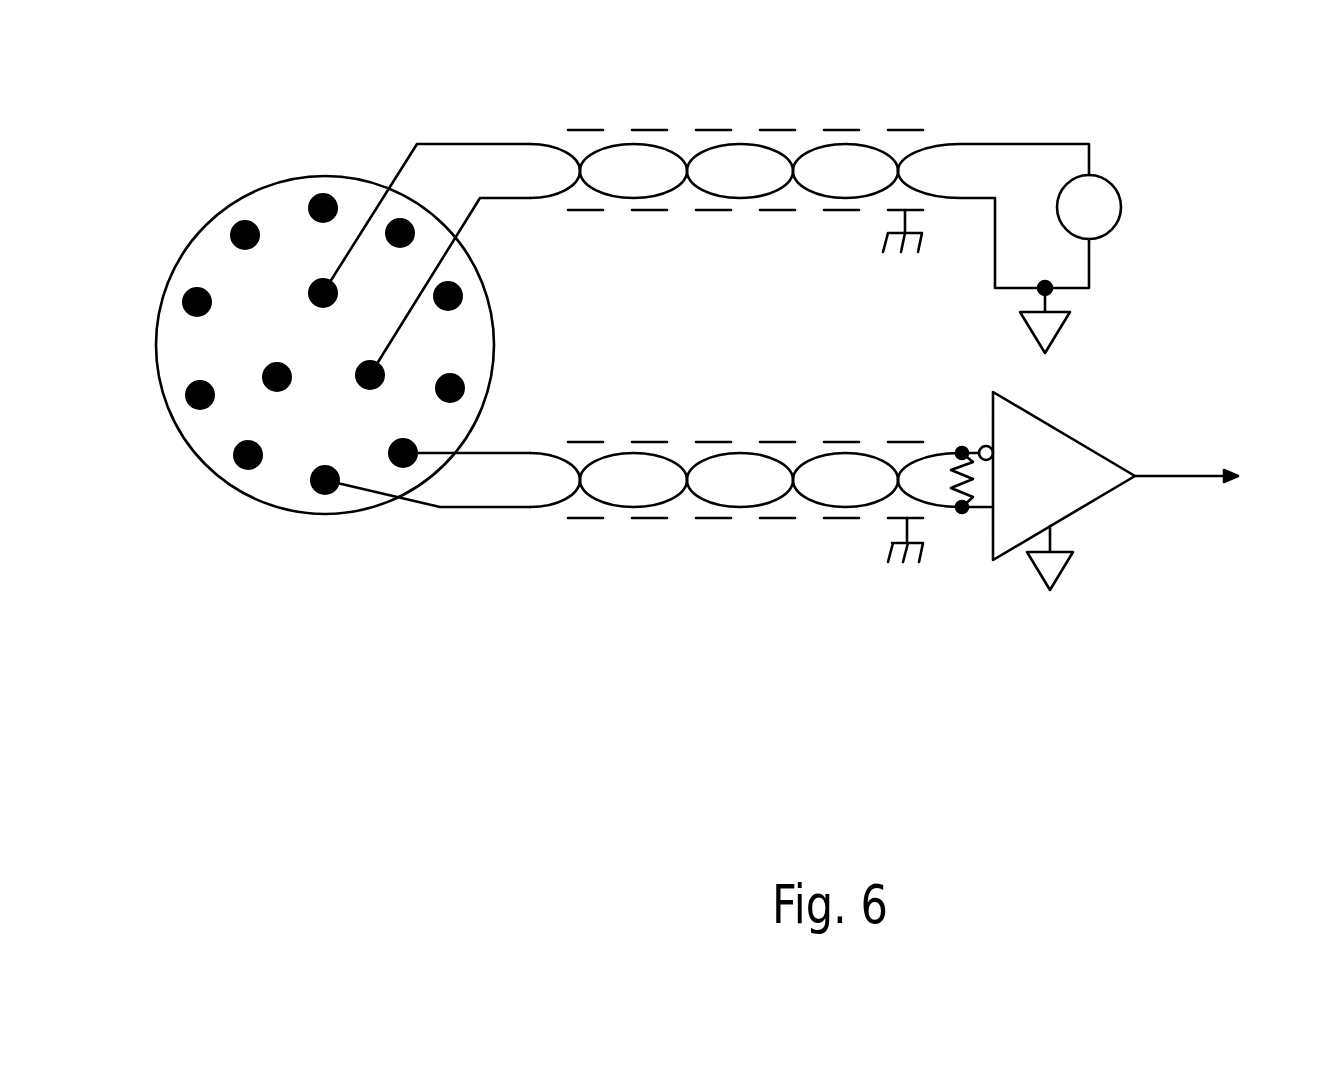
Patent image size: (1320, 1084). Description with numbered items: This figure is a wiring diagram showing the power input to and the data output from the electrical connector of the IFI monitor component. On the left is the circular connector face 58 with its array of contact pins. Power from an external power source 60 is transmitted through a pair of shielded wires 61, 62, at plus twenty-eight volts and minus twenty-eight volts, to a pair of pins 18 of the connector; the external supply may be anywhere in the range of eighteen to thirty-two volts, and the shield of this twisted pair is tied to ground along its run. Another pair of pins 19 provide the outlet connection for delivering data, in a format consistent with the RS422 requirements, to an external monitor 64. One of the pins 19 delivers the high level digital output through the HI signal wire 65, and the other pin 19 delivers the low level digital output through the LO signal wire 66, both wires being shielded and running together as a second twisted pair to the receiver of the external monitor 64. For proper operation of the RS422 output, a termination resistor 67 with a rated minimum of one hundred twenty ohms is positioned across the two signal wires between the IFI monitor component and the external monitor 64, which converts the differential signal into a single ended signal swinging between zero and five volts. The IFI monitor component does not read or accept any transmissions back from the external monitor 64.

The pins 18 is at (358, 367).
The pins 19 is at (388, 452).
The connector 58 is at (285, 513).
The power source 60 is at (1100, 175).
The shielded wire 61 is at (442, 144).
The shielded wire 62 is at (397, 333).
The external monitor 64 is at (1088, 505).
The HI signal wire 65 is at (490, 453).
The LO signal wire 66 is at (442, 508).
The termination resistor 67 is at (962, 490).